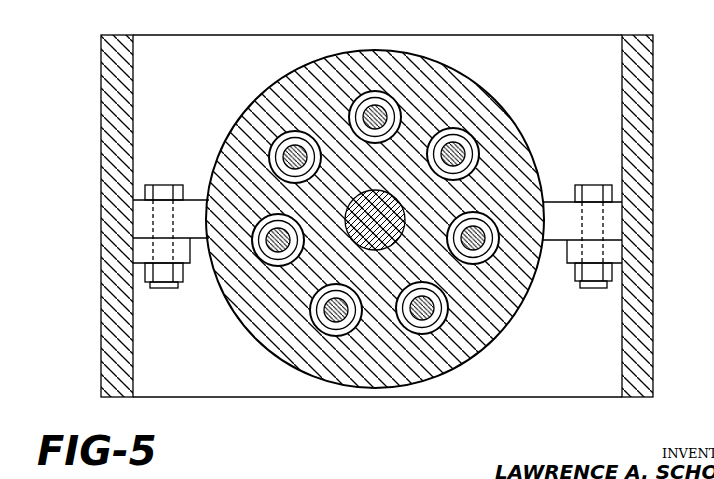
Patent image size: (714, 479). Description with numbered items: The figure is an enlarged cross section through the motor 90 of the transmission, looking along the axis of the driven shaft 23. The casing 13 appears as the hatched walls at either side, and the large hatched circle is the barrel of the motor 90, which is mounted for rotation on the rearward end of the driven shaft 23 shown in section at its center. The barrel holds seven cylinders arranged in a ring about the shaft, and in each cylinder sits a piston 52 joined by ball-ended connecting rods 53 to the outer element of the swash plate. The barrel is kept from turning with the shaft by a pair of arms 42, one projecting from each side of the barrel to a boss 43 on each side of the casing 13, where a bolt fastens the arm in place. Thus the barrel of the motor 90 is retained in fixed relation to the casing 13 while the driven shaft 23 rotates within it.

The casing 13 is at (645, 284).
The driven shaft 23 is at (406, 203).
The arms 42 is at (195, 199).
The boss 43 is at (190, 264).
The piston 52 is at (320, 162).
The ball-ended connecting rods 53 is at (387, 117).
The motor 90 is at (520, 117).